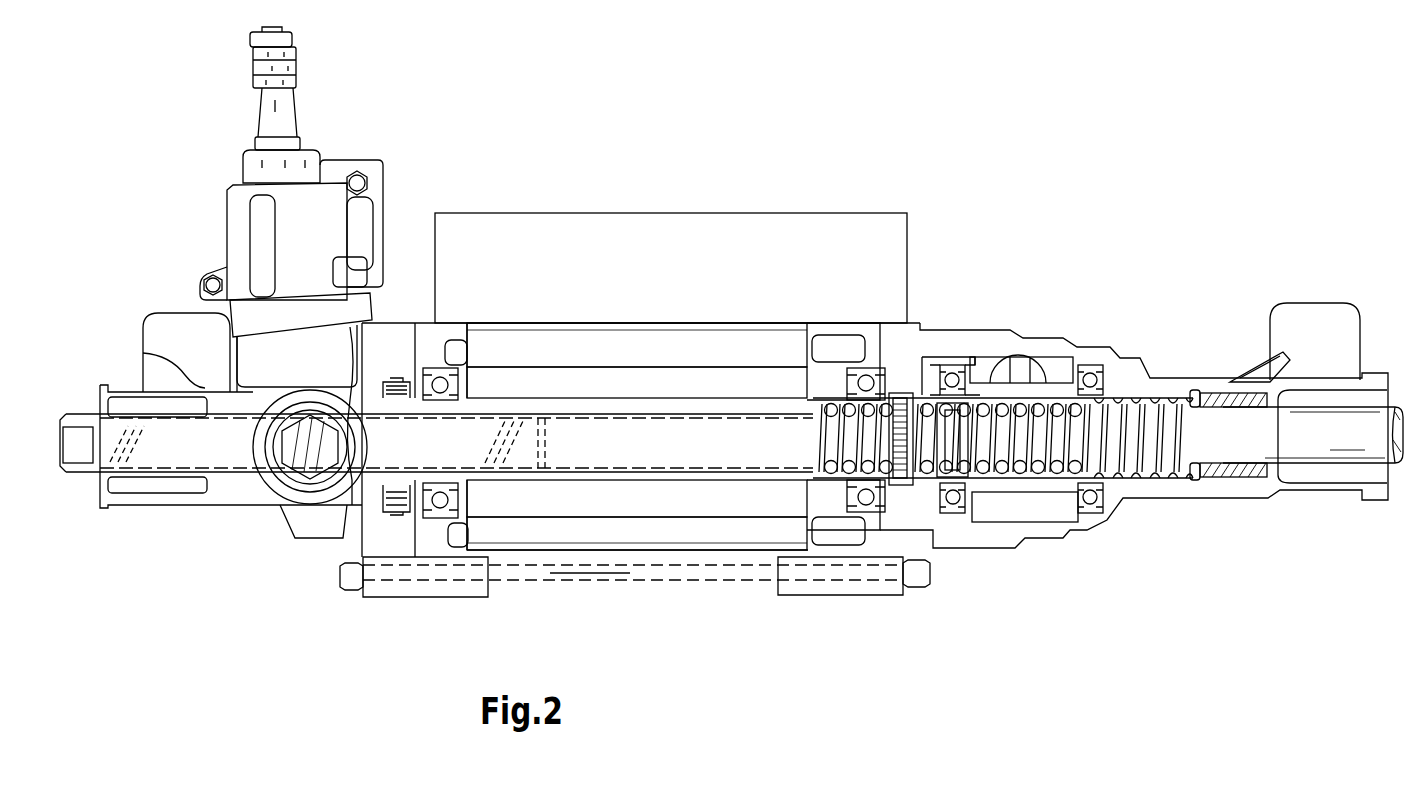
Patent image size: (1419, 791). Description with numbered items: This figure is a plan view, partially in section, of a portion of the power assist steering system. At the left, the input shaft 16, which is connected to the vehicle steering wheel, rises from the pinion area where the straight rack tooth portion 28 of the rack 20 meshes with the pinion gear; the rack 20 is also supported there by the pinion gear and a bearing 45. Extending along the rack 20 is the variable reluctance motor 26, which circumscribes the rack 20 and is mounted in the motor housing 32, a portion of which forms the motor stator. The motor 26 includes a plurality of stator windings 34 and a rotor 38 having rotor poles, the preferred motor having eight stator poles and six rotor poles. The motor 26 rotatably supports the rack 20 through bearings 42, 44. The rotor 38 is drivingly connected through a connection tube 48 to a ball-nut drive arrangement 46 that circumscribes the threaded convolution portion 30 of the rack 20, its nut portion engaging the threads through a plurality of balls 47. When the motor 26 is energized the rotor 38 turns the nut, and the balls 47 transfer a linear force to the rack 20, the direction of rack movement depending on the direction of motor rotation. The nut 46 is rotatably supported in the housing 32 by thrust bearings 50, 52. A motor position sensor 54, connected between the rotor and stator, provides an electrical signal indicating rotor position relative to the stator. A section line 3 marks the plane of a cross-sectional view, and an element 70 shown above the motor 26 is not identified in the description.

The section line 3- 3 is at (705, 203).
The input shaft 16 is at (284, 124).
The rack 20 is at (1273, 430).
The variable reluctance motor 26 is at (768, 318).
The straight rack tooth portion 28 is at (160, 461).
The threaded convolution portion 30 is at (1158, 392).
The motor housing 32 is at (757, 588).
The stator windings 34 is at (832, 535).
The rotor 38 is at (551, 497).
The bearing 42 is at (439, 384).
The bearing 44 is at (912, 382).
The bearing 45 is at (1223, 479).
The ball-nut drive arrangement 46 is at (1050, 488).
The balls 47 is at (1021, 405).
The connection tube 48 is at (953, 372).
The thrust bearing 50 is at (961, 362).
The thrust bearing 52 is at (1110, 504).
The motor position sensor 54 is at (382, 525).
The cover 70 is at (822, 212).